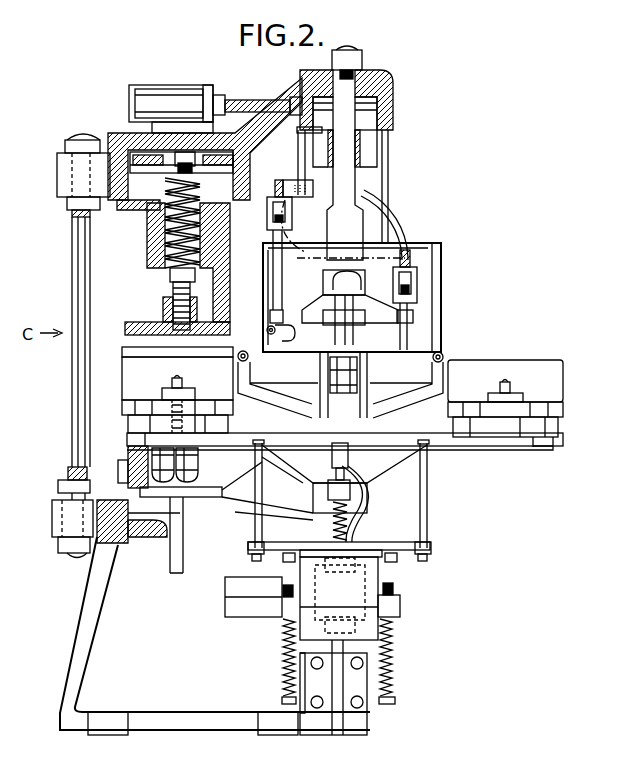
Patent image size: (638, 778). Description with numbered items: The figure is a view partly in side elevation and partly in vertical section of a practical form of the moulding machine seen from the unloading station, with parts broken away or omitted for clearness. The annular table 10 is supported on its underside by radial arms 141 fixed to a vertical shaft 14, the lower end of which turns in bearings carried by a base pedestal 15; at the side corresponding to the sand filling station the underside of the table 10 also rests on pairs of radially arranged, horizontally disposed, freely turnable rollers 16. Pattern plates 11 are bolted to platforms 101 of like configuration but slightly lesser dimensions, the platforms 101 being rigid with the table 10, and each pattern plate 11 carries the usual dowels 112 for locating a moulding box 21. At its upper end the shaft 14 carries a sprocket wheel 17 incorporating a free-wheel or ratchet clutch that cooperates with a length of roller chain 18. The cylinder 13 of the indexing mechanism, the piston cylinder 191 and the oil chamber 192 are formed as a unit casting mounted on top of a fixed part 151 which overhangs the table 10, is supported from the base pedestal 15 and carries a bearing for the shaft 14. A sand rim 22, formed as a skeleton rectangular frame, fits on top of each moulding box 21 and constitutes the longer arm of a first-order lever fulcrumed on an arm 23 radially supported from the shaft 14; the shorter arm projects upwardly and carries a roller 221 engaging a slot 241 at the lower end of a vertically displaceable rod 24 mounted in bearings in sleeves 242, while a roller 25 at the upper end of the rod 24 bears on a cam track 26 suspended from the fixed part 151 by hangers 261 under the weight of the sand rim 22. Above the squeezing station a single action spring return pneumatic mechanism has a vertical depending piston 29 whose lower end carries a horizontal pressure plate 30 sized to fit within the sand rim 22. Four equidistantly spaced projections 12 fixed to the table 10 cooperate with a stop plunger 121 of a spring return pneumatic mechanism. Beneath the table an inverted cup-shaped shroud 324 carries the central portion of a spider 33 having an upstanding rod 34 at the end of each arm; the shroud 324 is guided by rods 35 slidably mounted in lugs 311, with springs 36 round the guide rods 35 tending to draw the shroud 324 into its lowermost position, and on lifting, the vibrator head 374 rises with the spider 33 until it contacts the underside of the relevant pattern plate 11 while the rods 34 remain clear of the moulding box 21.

The annular table 10 is at (507, 447).
The pattern plate 11 is at (122, 403).
The projection 12 is at (143, 433).
The cylinder of the indexing mechanism 13 is at (152, 86).
The vertical shaft 14 is at (348, 187).
The base pedestal 15 is at (225, 718).
The rollers 16 is at (193, 480).
The sprocket wheel 17 is at (393, 105).
The roller chain 18 is at (262, 97).
The moulding box 21 is at (127, 368).
The sand rim 22 is at (378, 238).
The arm 23 is at (295, 388).
The vertically displaceable rod 24 is at (273, 265).
The roller 25 is at (287, 205).
The cam track 26 is at (300, 182).
The piston 29 is at (170, 268).
The pressure plate 30 is at (155, 322).
The spider 33 is at (395, 555).
The upstanding rod 34 is at (255, 474).
The guide rod 35 is at (283, 700).
The spring 36 is at (281, 654).
The platform 101 is at (128, 420).
The dowel 112 is at (505, 351).
The stop plunger 121 is at (128, 450).
The radial arm 141 is at (402, 460).
The fixed part 151 is at (122, 135).
The piston cylinder 191 is at (173, 92).
The oil chamber 192 is at (195, 88).
The roller 221 is at (288, 336).
The slot 241 is at (290, 320).
The sleeve 242 is at (272, 311).
The hanger 261 is at (298, 172).
The lug 311 is at (400, 605).
The inverted cup-shaped shroud 324 is at (382, 568).
The vibrator head 374 is at (330, 456).